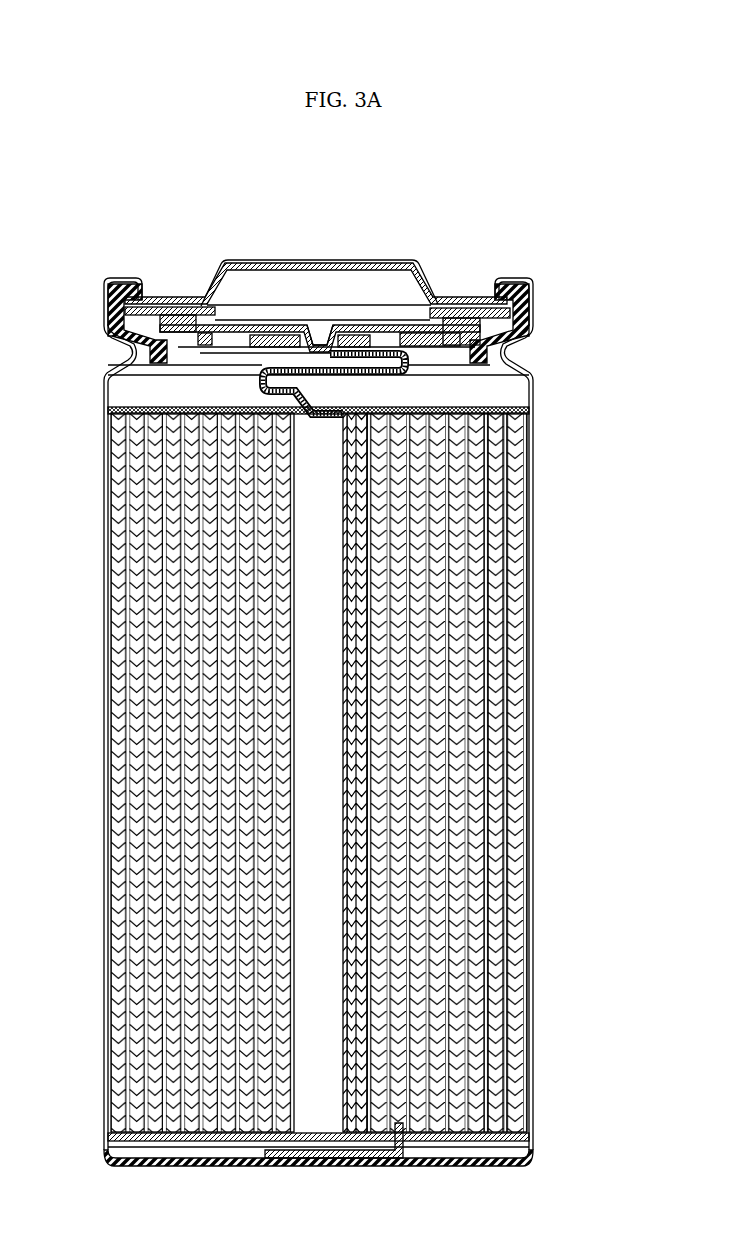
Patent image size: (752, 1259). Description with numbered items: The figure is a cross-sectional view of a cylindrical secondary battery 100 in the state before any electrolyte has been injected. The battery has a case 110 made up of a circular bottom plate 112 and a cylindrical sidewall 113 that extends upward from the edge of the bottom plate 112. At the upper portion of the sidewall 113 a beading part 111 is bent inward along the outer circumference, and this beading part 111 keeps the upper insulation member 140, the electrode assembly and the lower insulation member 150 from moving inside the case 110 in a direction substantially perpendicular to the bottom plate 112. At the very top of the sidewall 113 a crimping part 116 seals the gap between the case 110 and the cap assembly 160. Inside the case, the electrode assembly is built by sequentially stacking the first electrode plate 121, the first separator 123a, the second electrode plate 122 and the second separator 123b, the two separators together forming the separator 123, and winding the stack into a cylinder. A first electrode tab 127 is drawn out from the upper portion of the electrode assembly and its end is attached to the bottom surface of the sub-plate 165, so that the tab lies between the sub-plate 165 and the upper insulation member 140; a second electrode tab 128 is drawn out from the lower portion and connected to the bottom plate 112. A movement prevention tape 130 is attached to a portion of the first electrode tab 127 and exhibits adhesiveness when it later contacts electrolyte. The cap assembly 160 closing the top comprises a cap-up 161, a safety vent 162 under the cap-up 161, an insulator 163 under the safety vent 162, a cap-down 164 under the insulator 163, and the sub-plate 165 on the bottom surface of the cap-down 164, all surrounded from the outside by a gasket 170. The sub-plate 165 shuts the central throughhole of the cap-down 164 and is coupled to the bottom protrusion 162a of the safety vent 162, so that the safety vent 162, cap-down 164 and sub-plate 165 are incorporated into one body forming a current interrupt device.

The cylindrical secondary battery 100 is at (82, 214).
The case 110 is at (540, 657).
The beading part 111 is at (130, 355).
The bottom plate 112 is at (430, 1164).
The sidewall 113 is at (107, 543).
The crimping part 116 is at (120, 278).
The first electrode plate 121 is at (483, 495).
The second electrode plate 122 is at (520, 592).
The separator 123 is at (620, 522).
The first separator 123a is at (493, 533).
The second separator 123b is at (513, 562).
The first electrode tab 127 is at (413, 347).
The second electrode tab 128 is at (352, 1160).
The movement prevention tape 130 is at (383, 377).
The upper insulation member 140 is at (124, 408).
The lower insulation member 150 is at (513, 1146).
The cap assembly 160 is at (475, 202).
The cap-up 161 is at (331, 264).
The safety vent 162 is at (408, 328).
The bottom protrusion 162a is at (317, 345).
The insulator 163 is at (462, 308).
The cap-down 164 is at (487, 312).
The sub-plate 165 is at (258, 330).
The gasket 170 is at (512, 332).